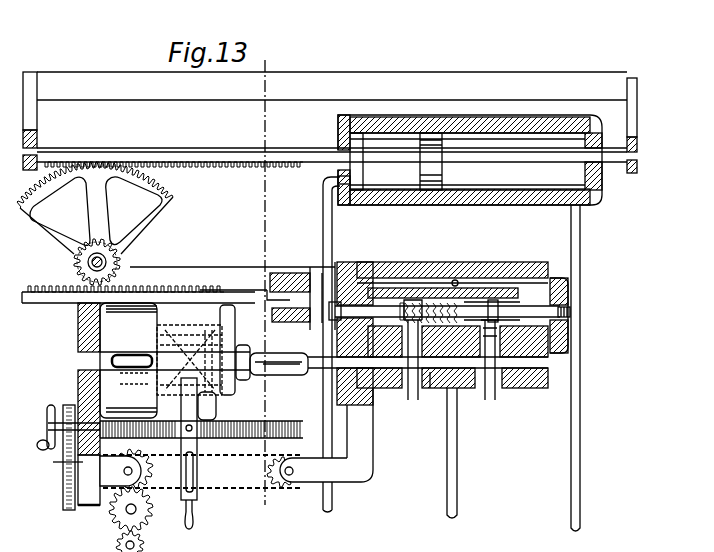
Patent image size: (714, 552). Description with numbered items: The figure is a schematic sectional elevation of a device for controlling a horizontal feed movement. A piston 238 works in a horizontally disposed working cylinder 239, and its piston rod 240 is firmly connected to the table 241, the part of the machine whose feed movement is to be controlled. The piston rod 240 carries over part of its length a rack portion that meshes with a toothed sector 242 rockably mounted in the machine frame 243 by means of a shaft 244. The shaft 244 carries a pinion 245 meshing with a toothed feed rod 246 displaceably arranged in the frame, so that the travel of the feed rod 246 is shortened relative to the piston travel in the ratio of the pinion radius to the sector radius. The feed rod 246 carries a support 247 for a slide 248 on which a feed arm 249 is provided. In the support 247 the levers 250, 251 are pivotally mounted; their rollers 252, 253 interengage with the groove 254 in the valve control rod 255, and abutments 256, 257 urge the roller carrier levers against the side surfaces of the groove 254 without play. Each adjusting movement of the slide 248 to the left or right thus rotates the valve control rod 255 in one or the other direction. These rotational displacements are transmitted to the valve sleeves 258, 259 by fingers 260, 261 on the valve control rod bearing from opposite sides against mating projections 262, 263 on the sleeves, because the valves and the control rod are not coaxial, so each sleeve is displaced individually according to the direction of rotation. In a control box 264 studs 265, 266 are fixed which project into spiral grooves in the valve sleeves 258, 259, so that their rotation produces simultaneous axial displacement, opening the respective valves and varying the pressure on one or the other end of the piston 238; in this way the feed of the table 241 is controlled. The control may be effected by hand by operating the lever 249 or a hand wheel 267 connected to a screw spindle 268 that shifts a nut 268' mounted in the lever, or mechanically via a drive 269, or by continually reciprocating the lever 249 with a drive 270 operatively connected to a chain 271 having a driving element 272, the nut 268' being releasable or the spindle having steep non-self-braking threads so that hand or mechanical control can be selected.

The piston 238 is at (425, 136).
The working cylinder 239 is at (487, 122).
The piston rod 240 is at (230, 153).
The table 241 is at (303, 95).
The toothed sector 242 is at (158, 196).
The machine frame 243 is at (277, 273).
The shaft 244 is at (118, 261).
The pinion 245 is at (76, 262).
The toothed feed rod 246 is at (44, 297).
The support 247 is at (229, 345).
The slide 248 is at (197, 404).
The feed arm 249 is at (195, 497).
The lever 250 is at (178, 350).
The lever 251 is at (248, 380).
The roller 252 is at (160, 380).
The roller 253 is at (200, 355).
The groove 254 is at (253, 360).
The valve control rod 255 is at (276, 375).
The abutment 256 is at (143, 373).
The abutment 257 is at (210, 350).
The valve sleeve 258 is at (405, 306).
The valve sleeve 259 is at (508, 303).
The finger 260 is at (393, 396).
The finger 261 is at (485, 372).
The projection 262 is at (413, 390).
The projection 263 is at (500, 388).
The control box 264 is at (437, 372).
The stud 265 is at (420, 305).
The stud 266 is at (495, 313).
The hand wheel 267 is at (50, 405).
The screw spindle 268 is at (201, 420).
The nut 268' is at (141, 420).
The drive 269 is at (83, 487).
The drive 270 is at (111, 522).
The chain 271 is at (246, 492).
The driving element 272 is at (195, 468).